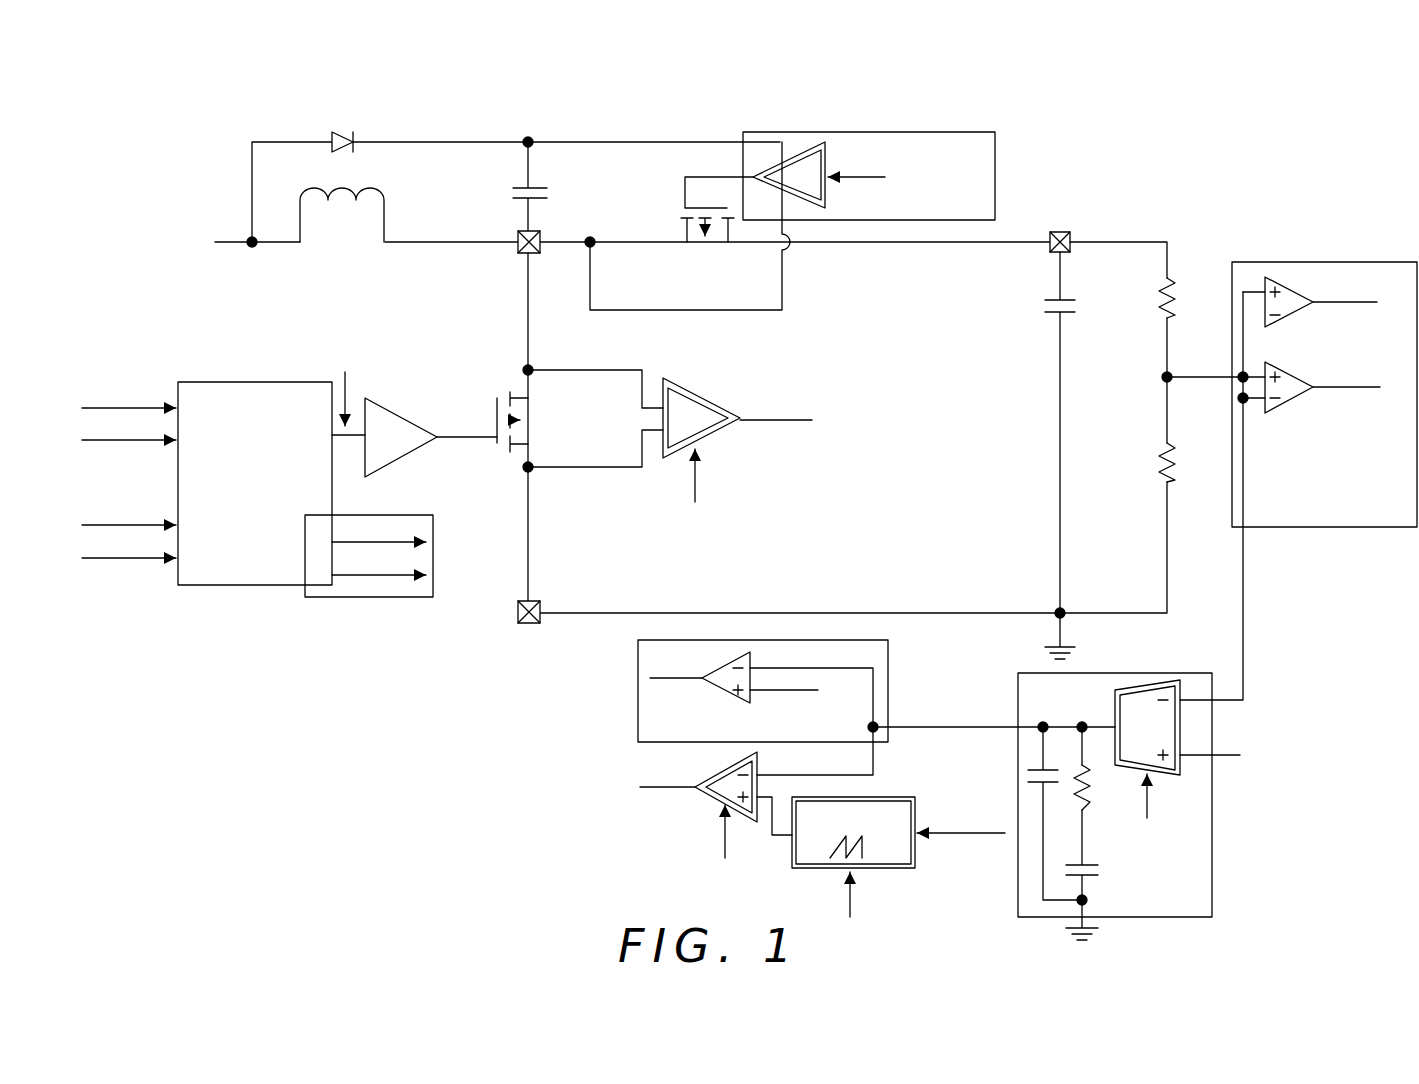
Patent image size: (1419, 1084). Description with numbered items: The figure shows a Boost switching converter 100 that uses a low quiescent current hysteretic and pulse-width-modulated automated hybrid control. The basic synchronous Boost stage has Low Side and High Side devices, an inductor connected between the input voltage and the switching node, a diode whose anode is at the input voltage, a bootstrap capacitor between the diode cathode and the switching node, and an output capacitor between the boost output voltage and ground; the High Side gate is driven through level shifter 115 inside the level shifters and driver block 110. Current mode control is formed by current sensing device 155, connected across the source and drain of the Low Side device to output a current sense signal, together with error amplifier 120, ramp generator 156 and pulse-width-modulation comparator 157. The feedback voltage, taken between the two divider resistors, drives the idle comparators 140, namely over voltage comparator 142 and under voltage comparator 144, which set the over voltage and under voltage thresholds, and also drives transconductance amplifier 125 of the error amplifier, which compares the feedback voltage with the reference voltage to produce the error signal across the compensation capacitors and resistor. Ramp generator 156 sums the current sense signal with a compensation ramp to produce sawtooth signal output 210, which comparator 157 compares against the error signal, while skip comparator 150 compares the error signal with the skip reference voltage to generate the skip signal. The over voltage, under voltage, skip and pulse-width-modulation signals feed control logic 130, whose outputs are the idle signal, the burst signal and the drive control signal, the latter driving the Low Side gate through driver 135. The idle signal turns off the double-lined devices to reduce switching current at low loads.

The Boost switching converter 100 is at (576, 76).
The level shifters and driver block 110 is at (822, 132).
The level shifter 115 is at (820, 205).
The error amplifier 120 is at (1212, 850).
The amplifier gm 125 is at (1112, 705).
The hysteretic-PWM control logic 130 is at (250, 382).
The driver 135 is at (402, 416).
The IDLE comparators 140 is at (1318, 262).
The over voltage comparator 142 is at (1293, 312).
The under voltage comparator 144 is at (1280, 365).
The skip comparator 150 is at (710, 640).
The current sensing device V-I 155 is at (700, 393).
The Ramp gen 156 is at (905, 797).
The PWM comparator 157 is at (758, 758).
The sawtooth signal output 210 is at (790, 845).